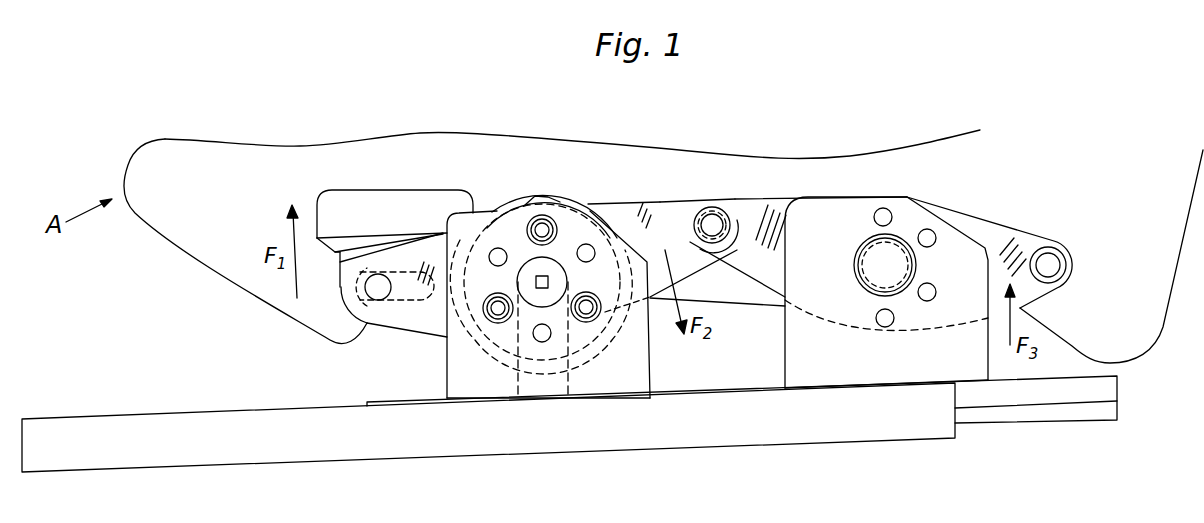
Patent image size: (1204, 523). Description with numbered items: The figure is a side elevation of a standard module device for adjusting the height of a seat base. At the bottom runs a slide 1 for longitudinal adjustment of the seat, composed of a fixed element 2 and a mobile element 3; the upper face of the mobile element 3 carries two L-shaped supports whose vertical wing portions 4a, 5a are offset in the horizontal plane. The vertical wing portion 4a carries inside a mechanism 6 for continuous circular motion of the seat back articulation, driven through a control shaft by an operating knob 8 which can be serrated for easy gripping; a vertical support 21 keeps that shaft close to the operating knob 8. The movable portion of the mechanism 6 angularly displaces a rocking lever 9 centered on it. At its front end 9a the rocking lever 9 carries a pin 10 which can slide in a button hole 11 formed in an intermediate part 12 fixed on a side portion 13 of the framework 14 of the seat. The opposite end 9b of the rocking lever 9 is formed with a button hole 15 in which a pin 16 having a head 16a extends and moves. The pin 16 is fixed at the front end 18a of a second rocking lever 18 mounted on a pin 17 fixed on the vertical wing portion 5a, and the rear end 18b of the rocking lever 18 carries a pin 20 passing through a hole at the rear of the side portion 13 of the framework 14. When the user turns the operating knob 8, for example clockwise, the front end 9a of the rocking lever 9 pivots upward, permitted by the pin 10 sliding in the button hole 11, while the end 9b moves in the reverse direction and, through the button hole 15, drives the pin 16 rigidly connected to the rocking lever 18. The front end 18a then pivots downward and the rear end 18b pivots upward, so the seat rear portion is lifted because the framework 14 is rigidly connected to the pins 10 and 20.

The slide 1 is at (938, 437).
The fixed element 2 is at (366, 458).
The mobile element 3 is at (1090, 400).
The vertical wing portion 4a is at (640, 372).
The vertical wing portion 5a is at (800, 340).
The mechanism 6 is at (540, 205).
The operating knob 8 is at (500, 205).
The rocking lever 9 is at (618, 208).
The front end 9a is at (387, 262).
The end 9b is at (680, 205).
The pin 10 is at (378, 298).
The button hole 11 is at (412, 297).
The intermediate part 12 is at (334, 200).
The side portion 13 is at (170, 150).
The framework 14 is at (481, 134).
The button hole 15 is at (692, 245).
The pin 16 is at (712, 215).
The head 16a is at (745, 200).
The pin 17 is at (888, 250).
The second rocking lever 18 is at (964, 218).
The front end 18a is at (780, 218).
The rear end 18b is at (1020, 250).
The pin 20 is at (1058, 265).
The vertical support 21 is at (550, 392).